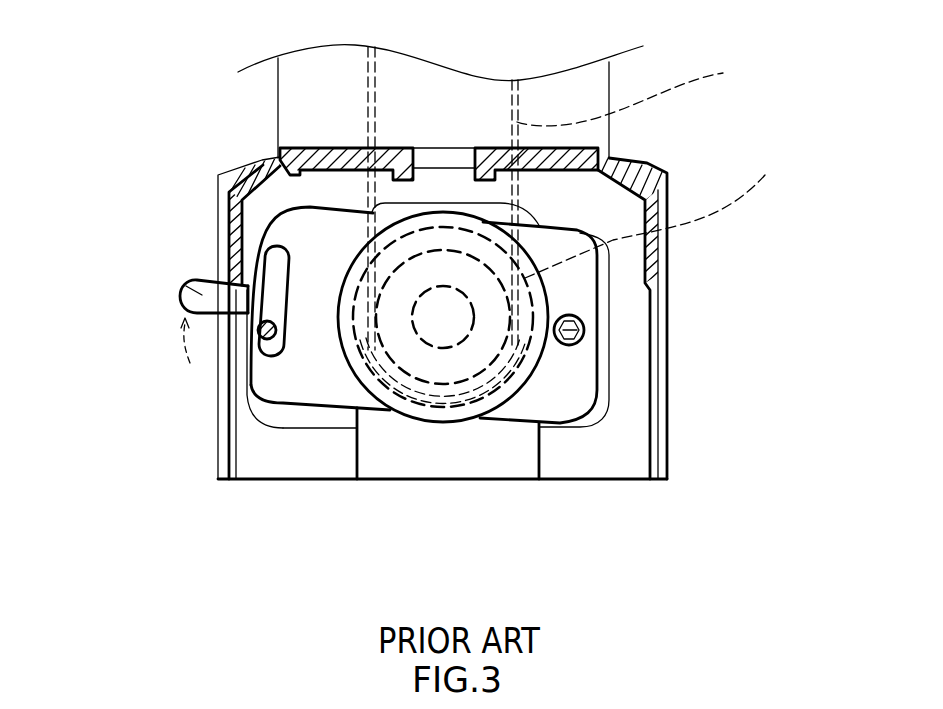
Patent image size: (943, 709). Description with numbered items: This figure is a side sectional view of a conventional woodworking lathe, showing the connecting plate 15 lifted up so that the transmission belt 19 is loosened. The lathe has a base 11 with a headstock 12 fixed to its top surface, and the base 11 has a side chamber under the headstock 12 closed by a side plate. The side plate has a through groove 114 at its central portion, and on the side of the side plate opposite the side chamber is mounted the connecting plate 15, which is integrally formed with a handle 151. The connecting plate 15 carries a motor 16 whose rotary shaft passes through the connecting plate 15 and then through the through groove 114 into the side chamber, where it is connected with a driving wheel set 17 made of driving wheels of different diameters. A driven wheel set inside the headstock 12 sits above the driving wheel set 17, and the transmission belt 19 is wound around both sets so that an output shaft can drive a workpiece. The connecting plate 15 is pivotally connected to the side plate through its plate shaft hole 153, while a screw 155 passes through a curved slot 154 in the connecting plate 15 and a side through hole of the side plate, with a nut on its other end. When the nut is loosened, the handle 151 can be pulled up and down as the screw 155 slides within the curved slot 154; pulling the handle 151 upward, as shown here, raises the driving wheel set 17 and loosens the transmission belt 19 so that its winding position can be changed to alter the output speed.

The base 11 is at (667, 308).
The headstock 12 is at (273, 115).
The transmission belt 19 is at (637, 90).
The driving wheel set 17 is at (659, 212).
The plate shaft hole 153 is at (585, 329).
The motor 16 is at (533, 375).
The through groove 114 is at (485, 457).
The connecting plate 15 is at (300, 377).
The screw 155 is at (262, 340).
The handle 151 is at (202, 295).
The curved slot 154 is at (278, 260).